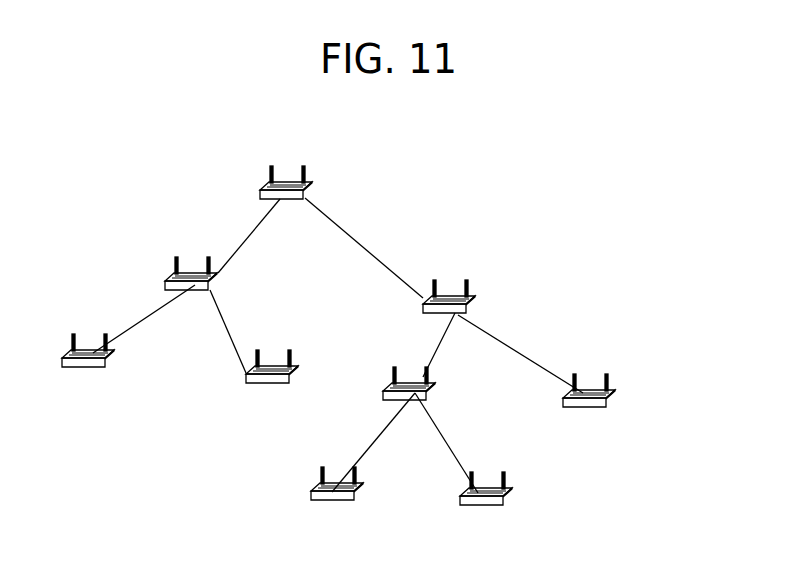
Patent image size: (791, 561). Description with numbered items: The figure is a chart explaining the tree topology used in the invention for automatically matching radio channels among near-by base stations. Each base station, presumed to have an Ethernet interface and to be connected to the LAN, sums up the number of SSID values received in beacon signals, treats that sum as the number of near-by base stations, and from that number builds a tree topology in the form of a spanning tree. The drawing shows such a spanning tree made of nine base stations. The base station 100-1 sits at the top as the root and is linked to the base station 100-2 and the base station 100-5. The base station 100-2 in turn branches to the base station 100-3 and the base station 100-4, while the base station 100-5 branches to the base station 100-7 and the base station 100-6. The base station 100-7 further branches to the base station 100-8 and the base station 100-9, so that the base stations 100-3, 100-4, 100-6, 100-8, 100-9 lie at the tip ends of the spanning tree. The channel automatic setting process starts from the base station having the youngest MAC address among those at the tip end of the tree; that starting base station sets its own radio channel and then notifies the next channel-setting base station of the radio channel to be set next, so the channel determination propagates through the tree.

The base station 100-1 is at (312, 184).
The base station 100-2 is at (214, 278).
The base station 100-3 is at (110, 355).
The base station 100-4 is at (298, 369).
The base station 100-5 is at (477, 299).
The base station 100-7 is at (433, 387).
The base station 100-6 is at (616, 394).
The base station 100-8 is at (328, 497).
The base station 100-9 is at (508, 493).